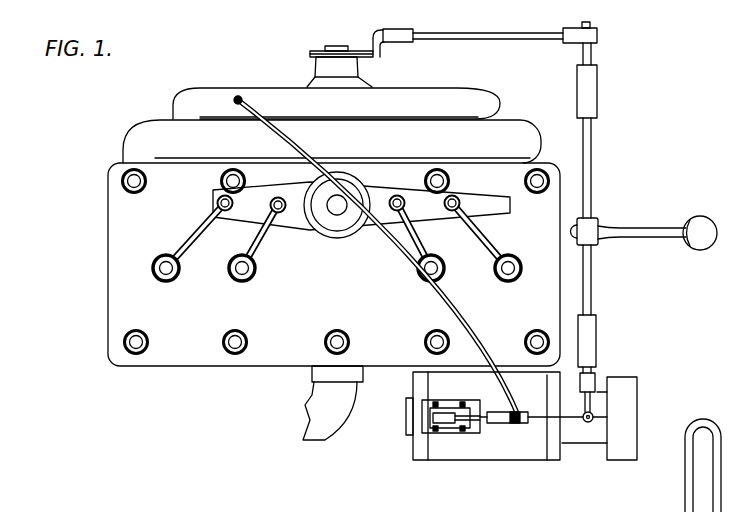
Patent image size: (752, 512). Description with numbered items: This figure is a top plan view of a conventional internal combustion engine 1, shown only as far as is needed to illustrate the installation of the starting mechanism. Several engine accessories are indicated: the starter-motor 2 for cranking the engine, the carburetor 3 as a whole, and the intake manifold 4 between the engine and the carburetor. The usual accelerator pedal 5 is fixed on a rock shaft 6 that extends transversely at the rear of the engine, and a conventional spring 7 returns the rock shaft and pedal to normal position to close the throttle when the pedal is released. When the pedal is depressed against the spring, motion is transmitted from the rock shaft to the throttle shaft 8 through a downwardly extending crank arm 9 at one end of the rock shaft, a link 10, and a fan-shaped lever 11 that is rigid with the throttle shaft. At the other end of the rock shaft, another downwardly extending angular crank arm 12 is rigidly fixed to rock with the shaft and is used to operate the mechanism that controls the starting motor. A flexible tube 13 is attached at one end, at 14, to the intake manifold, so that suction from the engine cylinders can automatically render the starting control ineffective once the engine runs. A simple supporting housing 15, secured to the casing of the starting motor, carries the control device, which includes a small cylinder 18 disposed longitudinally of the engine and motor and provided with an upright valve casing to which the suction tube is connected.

The internal combustion engine 1 is at (127, 300).
The starter-motor 2 is at (483, 450).
The carburetor 3 is at (305, 85).
The intake manifold 4 is at (457, 88).
The pedal 5 is at (701, 217).
The rock shaft 6 is at (591, 170).
The spring 7 is at (572, 244).
The throttle shaft 8 is at (331, 46).
The crank arm 9 is at (591, 58).
The link 10 is at (458, 28).
The lever 11 is at (303, 51).
The crank arm 12 is at (592, 400).
The flexible tube 13 is at (402, 255).
The attachment point 14 is at (238, 100).
The supporting housing 15 is at (438, 420).
The cylinder 18 is at (532, 426).